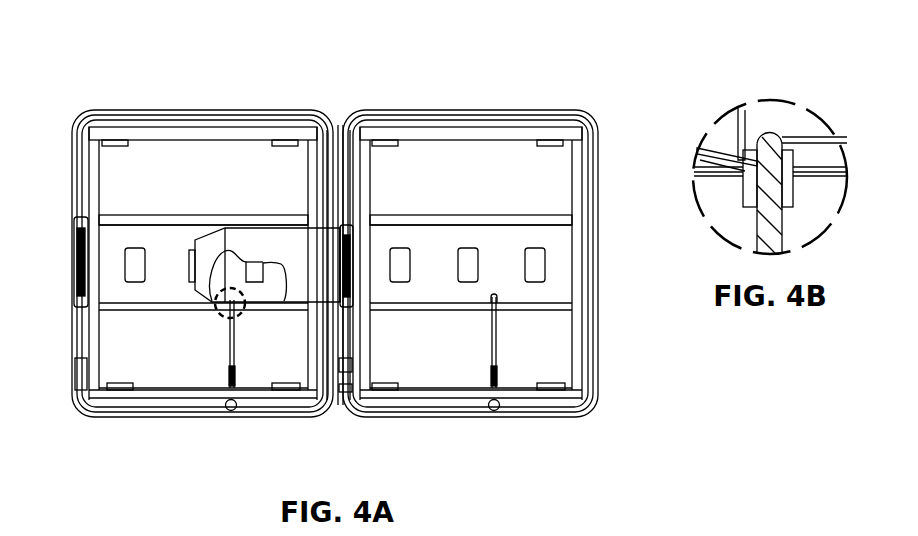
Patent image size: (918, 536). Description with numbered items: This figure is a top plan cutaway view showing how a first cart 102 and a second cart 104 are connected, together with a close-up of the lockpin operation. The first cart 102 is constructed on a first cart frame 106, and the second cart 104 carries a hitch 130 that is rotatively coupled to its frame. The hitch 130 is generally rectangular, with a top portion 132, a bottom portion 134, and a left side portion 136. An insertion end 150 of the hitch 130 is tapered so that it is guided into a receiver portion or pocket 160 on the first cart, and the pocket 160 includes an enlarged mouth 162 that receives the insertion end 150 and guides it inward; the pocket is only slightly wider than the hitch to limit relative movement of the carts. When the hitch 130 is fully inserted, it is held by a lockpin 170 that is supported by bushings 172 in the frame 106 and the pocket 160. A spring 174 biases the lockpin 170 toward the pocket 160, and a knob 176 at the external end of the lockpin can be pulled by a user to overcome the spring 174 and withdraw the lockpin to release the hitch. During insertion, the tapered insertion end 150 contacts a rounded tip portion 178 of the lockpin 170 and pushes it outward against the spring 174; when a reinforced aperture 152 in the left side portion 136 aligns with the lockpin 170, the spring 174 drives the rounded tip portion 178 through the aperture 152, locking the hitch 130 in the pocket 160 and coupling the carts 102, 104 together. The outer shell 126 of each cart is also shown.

In FIG. 4A, the first cart 102 is at (202, 216).
In FIG. 4A, the second cart 104 is at (470, 222).
In FIG. 4A, the first cart frame 106 is at (95, 178).
In FIG. 4A, the outer shell 126 is at (337, 240).
In FIG. 4A, the hitch 130 is at (256, 191).
In FIG. 4A, the top portion 132 is at (275, 174).
In FIG. 4A, the bottom portion 134 is at (226, 313).
In FIG. 4A, the left side portion 136 is at (297, 356).
In FIG. 4A, the insertion end 150 is at (214, 292).
In FIG. 4B, the reinforced aperture 152 is at (737, 118).
In FIG. 4A, the pocket 160 is at (203, 192).
In FIG. 4A, the enlarged mouth 162 is at (374, 265).
In FIG. 4A, the lockpin 170 is at (422, 371).
In FIG. 4B, the lockpin 170 is at (820, 198).
In FIG. 4A, the bushings 172 is at (222, 304).
In FIG. 4B, the bushings 172 is at (739, 172).
In FIG. 4A, the spring 174 is at (362, 400).
In FIG. 4A, the knob 176 is at (369, 444).
In FIG. 4B, the rounded tip portion 178 is at (815, 167).